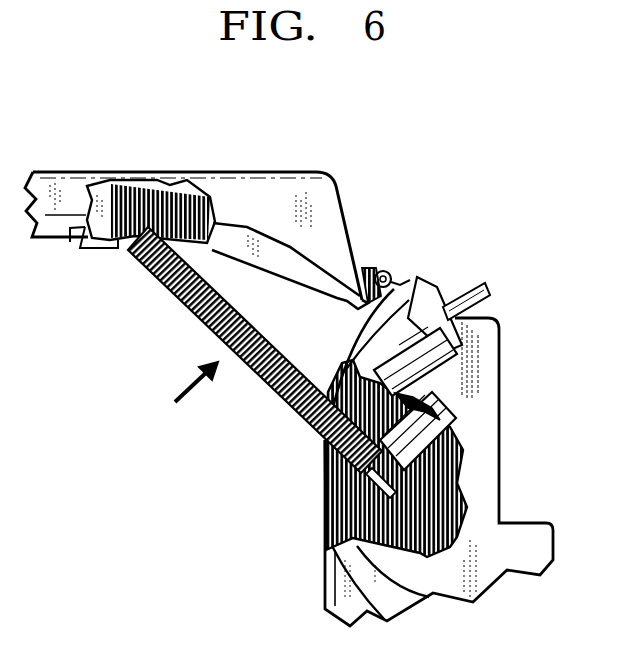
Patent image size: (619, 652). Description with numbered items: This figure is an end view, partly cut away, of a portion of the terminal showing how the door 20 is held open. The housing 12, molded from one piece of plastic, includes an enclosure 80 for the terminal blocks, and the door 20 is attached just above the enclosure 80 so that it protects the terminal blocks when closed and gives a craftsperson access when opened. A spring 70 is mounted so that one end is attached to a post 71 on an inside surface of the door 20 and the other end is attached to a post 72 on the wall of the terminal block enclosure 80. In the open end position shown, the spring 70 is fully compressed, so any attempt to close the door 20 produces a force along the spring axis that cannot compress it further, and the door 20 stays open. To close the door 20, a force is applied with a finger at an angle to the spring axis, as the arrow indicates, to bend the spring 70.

The housing 12 is at (485, 479).
The door 20 is at (338, 213).
The post 71 is at (95, 224).
The spring 70 is at (188, 305).
The enclosure 80 is at (330, 525).
The post 72 is at (412, 404).